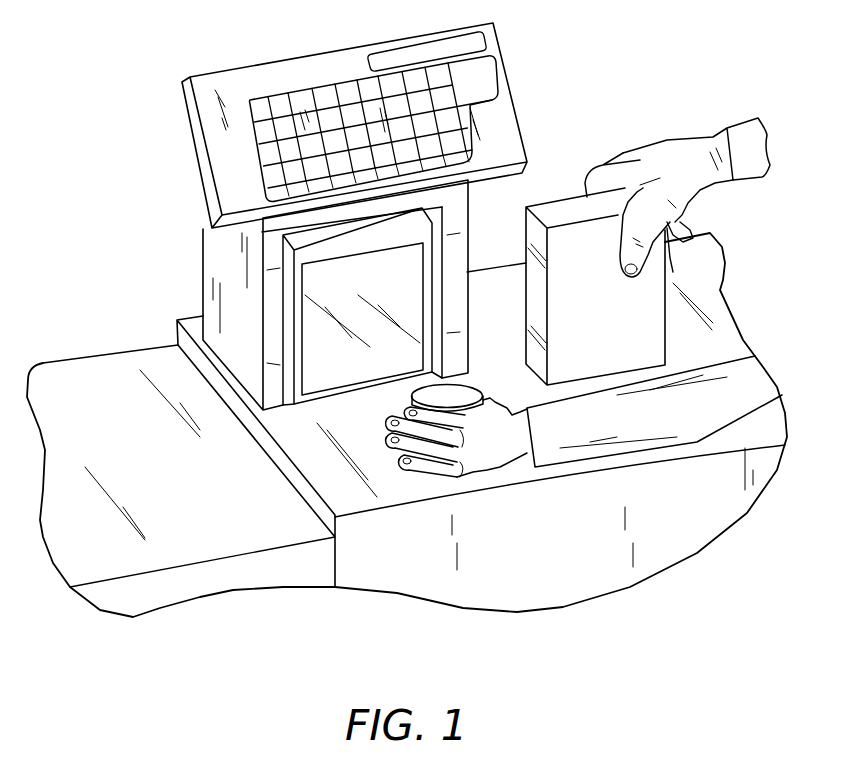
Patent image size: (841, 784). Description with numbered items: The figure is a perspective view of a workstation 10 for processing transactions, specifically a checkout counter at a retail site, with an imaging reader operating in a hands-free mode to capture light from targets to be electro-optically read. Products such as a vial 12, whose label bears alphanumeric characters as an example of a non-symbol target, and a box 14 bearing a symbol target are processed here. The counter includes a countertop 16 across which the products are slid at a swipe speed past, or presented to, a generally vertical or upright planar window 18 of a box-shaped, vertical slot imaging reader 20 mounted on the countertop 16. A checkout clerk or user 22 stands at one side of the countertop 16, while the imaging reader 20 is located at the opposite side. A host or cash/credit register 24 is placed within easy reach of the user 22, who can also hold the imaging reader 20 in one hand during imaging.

The workstation 10 is at (567, 162).
The vial 12 is at (437, 482).
The box 14 is at (562, 292).
The countertop 16 is at (315, 468).
The window 18 is at (337, 382).
The imaging reader 20 is at (335, 252).
The user 22 is at (745, 356).
The cash/credit register 24 is at (302, 67).